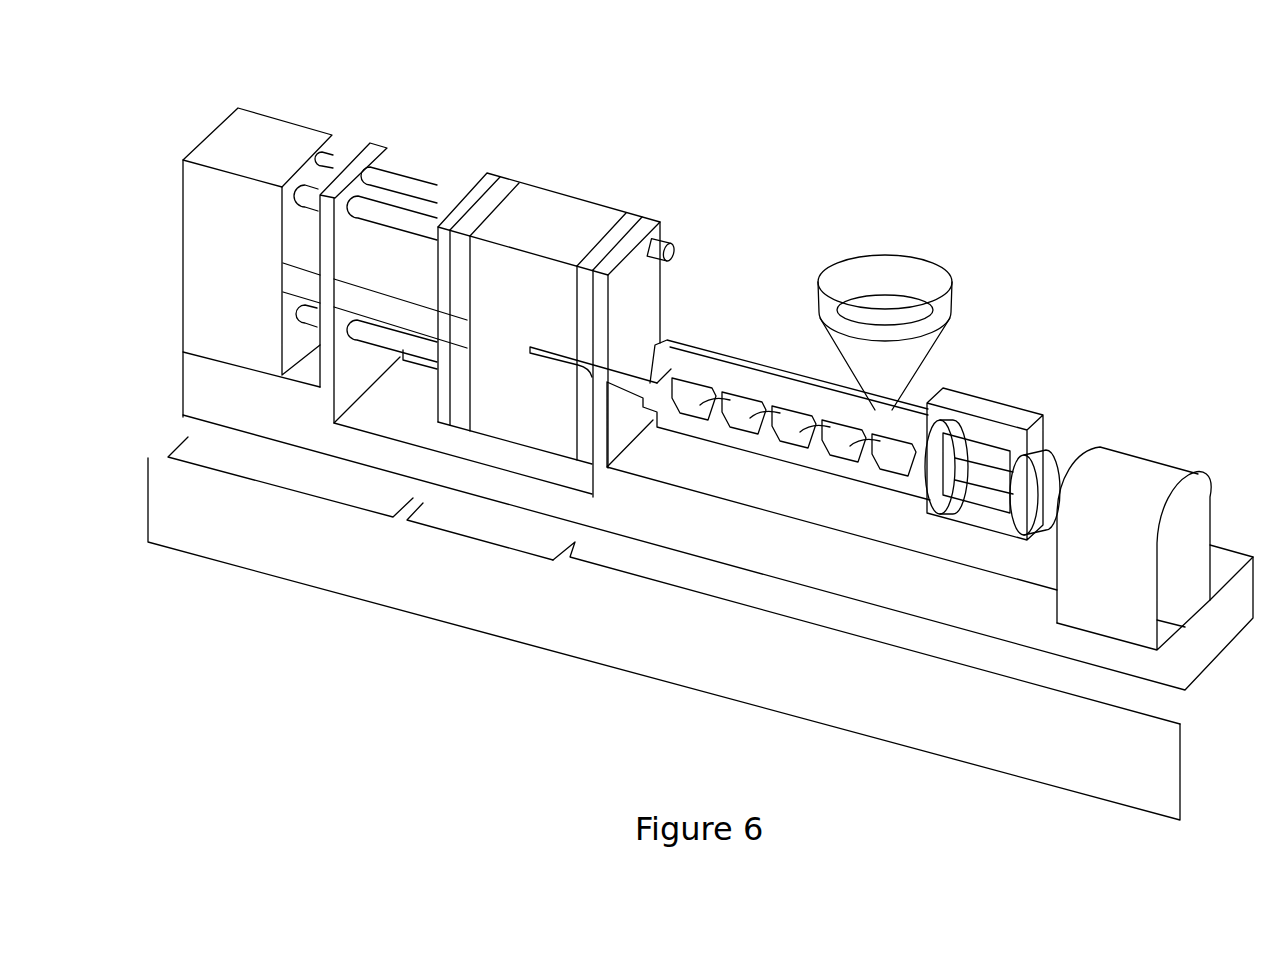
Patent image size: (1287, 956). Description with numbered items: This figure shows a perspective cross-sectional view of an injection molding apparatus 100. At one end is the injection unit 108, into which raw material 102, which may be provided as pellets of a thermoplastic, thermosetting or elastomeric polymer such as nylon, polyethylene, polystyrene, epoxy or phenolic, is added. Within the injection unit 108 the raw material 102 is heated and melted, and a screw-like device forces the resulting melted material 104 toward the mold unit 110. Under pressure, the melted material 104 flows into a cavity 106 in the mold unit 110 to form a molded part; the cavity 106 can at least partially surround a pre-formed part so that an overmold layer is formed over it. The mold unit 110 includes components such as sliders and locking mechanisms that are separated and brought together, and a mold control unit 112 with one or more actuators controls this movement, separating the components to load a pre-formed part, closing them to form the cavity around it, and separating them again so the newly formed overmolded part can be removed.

The injection molding apparatus 100 is at (298, 583).
The raw material 102 is at (898, 307).
The melted material 104 is at (650, 383).
The cavity 106 is at (530, 347).
The injection unit 108 is at (820, 623).
The mold unit 110 is at (480, 546).
The mold control unit 112 is at (290, 484).